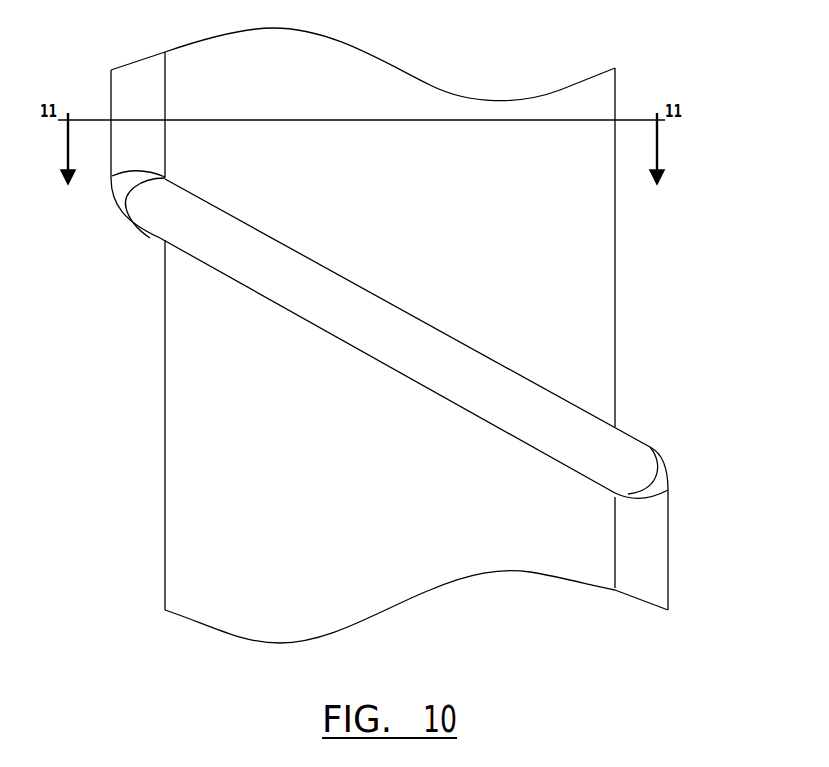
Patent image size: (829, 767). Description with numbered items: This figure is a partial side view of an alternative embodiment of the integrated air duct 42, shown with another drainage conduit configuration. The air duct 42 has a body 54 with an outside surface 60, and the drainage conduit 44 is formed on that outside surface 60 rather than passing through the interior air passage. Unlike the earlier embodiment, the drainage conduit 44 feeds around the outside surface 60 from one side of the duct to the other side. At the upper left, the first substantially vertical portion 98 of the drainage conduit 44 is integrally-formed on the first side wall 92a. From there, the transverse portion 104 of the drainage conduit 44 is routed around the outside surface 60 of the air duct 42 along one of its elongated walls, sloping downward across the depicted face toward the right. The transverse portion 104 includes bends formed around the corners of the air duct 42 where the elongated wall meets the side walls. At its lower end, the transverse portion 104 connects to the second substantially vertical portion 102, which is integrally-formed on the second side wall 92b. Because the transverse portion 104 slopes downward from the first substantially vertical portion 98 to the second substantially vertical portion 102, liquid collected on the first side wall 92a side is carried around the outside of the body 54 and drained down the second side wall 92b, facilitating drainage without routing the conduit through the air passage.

The integrated air duct 42 is at (730, 62).
The drainage conduit 44 is at (157, 212).
The body 54 is at (587, 222).
The outside surface 60 is at (165, 372).
The first side wall 92a is at (165, 477).
The second side wall 92b is at (615, 350).
The first substantially vertical portion 98 is at (130, 152).
The second substantially vertical portion 102 is at (648, 543).
The transverse portion 104 is at (365, 325).